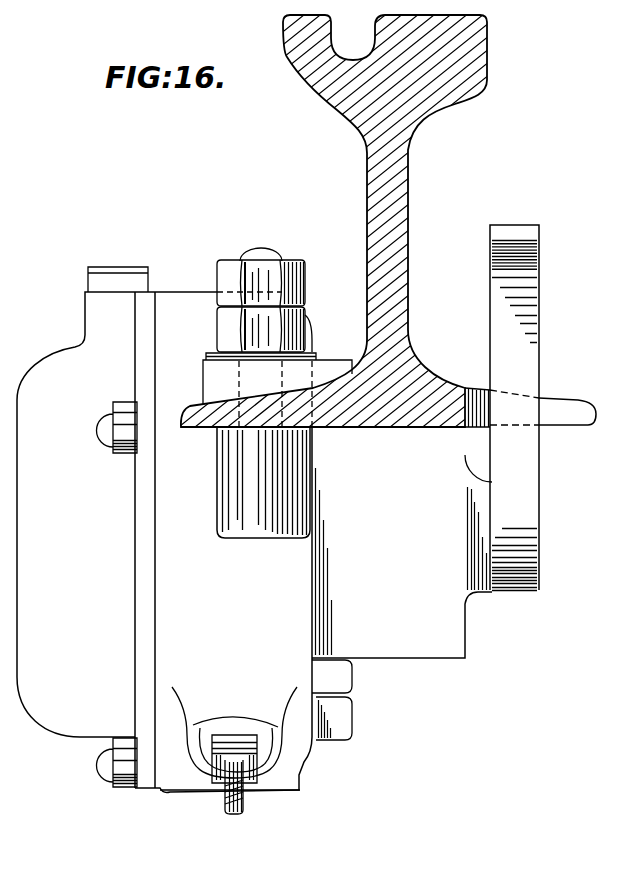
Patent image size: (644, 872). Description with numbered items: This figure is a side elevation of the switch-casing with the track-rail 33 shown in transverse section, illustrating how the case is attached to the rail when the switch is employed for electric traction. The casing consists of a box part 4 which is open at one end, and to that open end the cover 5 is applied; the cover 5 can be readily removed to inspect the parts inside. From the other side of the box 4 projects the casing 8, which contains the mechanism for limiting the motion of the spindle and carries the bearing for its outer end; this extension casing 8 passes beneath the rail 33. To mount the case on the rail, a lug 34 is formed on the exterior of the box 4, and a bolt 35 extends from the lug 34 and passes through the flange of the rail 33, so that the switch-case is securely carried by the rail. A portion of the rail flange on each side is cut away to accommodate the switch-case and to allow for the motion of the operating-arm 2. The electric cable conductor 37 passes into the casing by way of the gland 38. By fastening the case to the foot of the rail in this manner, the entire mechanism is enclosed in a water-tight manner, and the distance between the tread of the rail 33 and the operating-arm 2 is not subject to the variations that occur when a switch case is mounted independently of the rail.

The operating-arm 2 is at (520, 357).
The box part 4 is at (178, 788).
The cover 5 is at (69, 354).
The casing 8 is at (421, 647).
The track-rail 33 is at (401, 278).
The lug 34 is at (249, 526).
The bolt 35 is at (266, 253).
The electric cable conductor 37 is at (229, 792).
The gland 38 is at (272, 745).